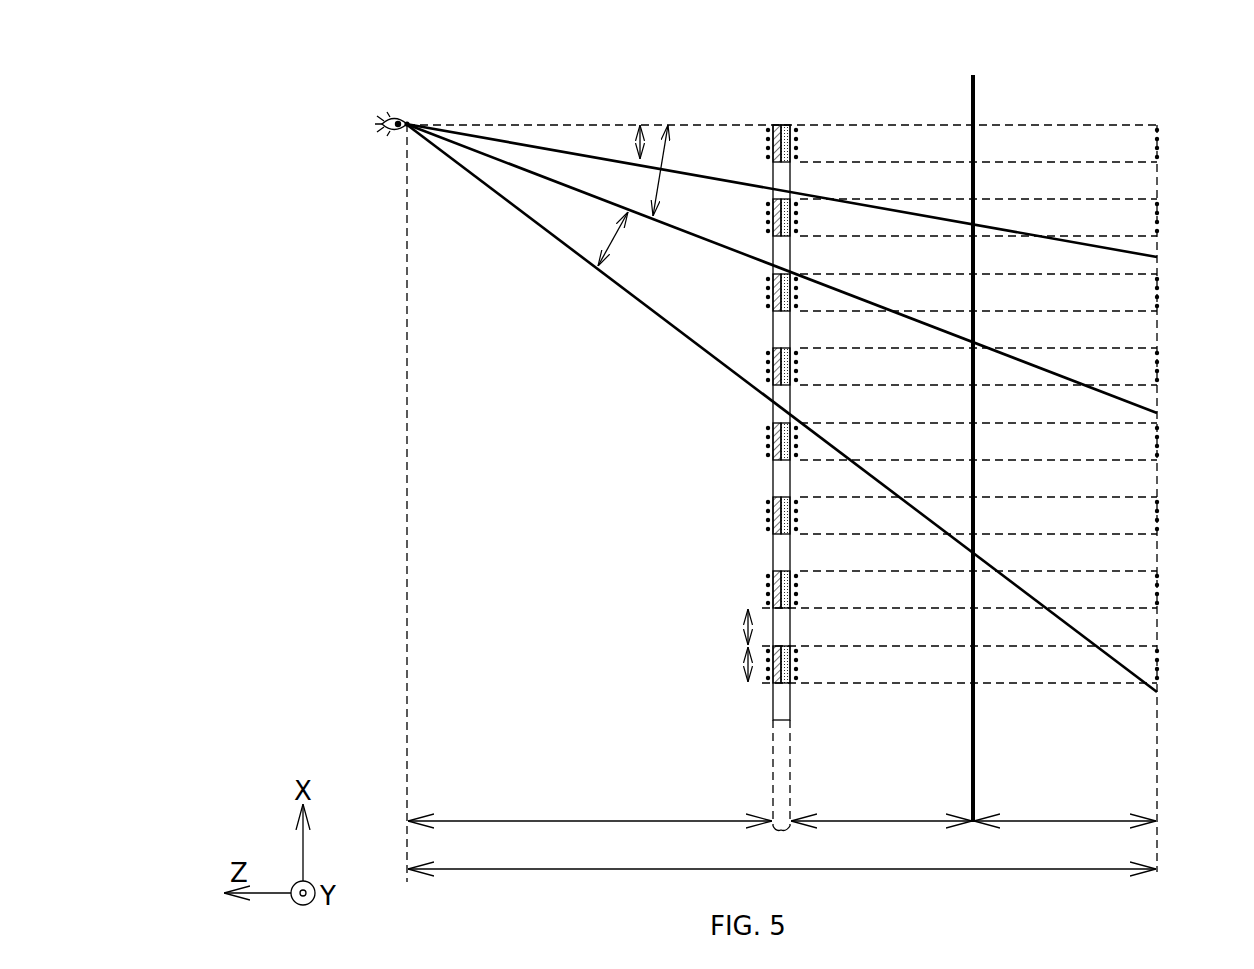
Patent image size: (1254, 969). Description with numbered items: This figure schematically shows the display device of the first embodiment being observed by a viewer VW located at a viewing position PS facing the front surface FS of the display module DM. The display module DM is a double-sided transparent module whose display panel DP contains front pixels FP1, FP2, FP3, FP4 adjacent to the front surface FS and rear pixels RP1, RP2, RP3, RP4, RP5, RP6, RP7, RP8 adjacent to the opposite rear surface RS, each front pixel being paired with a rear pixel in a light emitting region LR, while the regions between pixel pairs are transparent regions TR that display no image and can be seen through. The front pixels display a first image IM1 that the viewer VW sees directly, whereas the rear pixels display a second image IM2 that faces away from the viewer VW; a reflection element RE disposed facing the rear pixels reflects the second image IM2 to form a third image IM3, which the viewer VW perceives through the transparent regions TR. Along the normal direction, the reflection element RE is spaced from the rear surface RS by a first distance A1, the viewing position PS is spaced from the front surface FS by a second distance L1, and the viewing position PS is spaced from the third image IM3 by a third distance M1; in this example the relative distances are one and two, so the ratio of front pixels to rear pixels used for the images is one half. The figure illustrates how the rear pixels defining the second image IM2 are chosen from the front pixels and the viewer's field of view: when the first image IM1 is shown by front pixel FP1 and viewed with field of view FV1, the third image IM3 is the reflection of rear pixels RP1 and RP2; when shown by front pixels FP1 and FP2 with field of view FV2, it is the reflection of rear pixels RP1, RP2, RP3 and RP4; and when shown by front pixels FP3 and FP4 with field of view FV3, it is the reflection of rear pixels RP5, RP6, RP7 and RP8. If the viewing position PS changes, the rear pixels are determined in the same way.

The viewer VW is at (400, 105).
The viewing position PS is at (409, 122).
The field of view FV1 is at (638, 138).
The field of view FV2 is at (655, 210).
The field of view FV3 is at (620, 238).
The display module DM is at (781, 122).
The display panel DP is at (780, 831).
The front pixel FP1 is at (767, 122).
The front pixel FP2 is at (767, 222).
The front pixel FP3 is at (767, 291).
The front pixel FP4 is at (766, 366).
The rear pixel RP1 is at (797, 122).
The rear pixel RP2 is at (798, 221).
The rear pixel RP3 is at (798, 300).
The rear pixel RP4 is at (798, 366).
The rear pixel RP5 is at (798, 441).
The rear pixel RP6 is at (798, 515).
The rear pixel RP7 is at (798, 588).
The rear pixel RP8 is at (798, 665).
The front surface FS is at (766, 143).
The rear surface RS is at (798, 143).
The first image IM1 is at (766, 590).
The second image IM2 is at (798, 656).
The third image IM3 is at (1160, 132).
The transparent region TR is at (725, 627).
The light emitting region LR is at (725, 664).
The reflection element RE is at (978, 107).
The second distance L1 is at (590, 804).
The first distance A1 is at (973, 804).
The third distance M1 is at (782, 853).